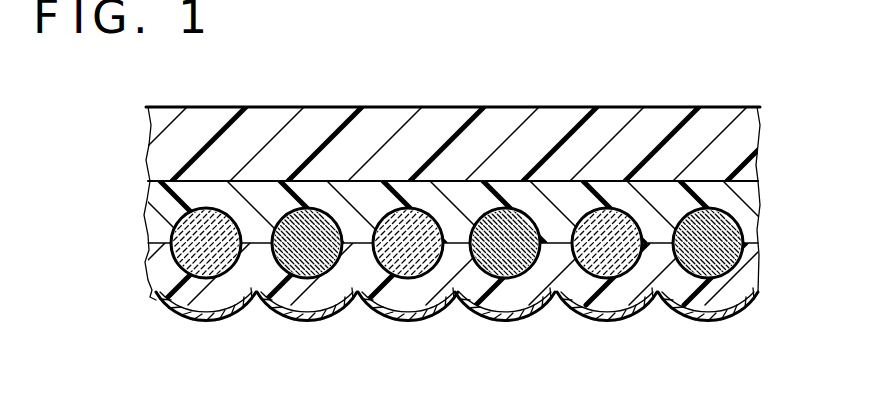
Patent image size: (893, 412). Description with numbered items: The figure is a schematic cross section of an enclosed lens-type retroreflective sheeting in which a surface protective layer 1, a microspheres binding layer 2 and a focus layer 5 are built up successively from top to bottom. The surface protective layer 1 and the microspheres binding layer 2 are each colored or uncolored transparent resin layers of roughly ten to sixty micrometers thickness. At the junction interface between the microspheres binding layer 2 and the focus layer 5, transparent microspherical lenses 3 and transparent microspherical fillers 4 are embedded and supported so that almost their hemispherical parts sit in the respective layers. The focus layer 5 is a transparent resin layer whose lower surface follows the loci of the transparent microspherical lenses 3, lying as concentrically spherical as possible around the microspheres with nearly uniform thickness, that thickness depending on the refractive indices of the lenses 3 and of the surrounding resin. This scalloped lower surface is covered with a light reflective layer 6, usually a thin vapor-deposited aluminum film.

The surface protective layer 1 is at (742, 128).
The microspheres binding layer 2 is at (745, 195).
The transparent microspherical lenses 3 is at (605, 262).
The transparent microspherical fillers 4 is at (757, 214).
The focus layer 5 is at (743, 270).
The light reflective layer 6 is at (733, 297).